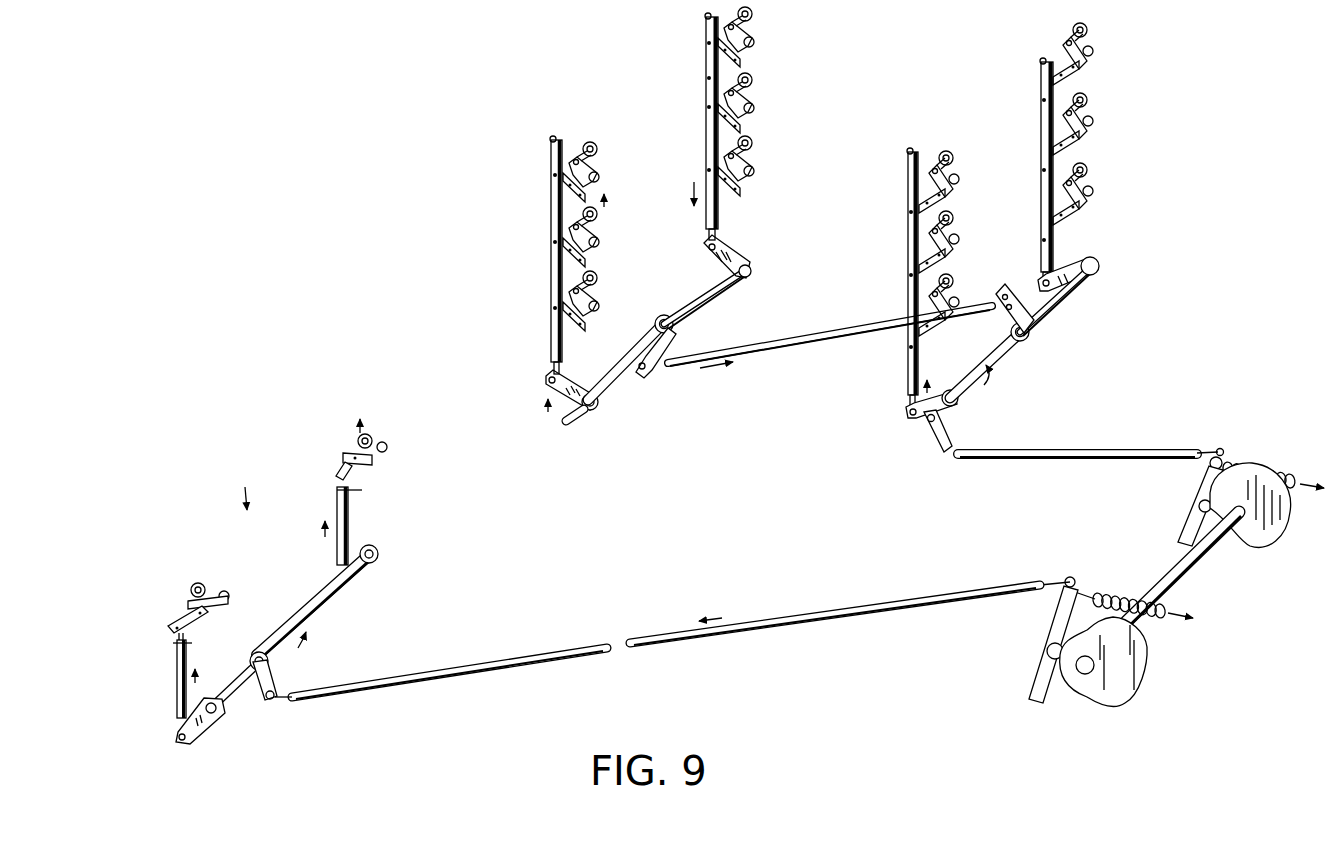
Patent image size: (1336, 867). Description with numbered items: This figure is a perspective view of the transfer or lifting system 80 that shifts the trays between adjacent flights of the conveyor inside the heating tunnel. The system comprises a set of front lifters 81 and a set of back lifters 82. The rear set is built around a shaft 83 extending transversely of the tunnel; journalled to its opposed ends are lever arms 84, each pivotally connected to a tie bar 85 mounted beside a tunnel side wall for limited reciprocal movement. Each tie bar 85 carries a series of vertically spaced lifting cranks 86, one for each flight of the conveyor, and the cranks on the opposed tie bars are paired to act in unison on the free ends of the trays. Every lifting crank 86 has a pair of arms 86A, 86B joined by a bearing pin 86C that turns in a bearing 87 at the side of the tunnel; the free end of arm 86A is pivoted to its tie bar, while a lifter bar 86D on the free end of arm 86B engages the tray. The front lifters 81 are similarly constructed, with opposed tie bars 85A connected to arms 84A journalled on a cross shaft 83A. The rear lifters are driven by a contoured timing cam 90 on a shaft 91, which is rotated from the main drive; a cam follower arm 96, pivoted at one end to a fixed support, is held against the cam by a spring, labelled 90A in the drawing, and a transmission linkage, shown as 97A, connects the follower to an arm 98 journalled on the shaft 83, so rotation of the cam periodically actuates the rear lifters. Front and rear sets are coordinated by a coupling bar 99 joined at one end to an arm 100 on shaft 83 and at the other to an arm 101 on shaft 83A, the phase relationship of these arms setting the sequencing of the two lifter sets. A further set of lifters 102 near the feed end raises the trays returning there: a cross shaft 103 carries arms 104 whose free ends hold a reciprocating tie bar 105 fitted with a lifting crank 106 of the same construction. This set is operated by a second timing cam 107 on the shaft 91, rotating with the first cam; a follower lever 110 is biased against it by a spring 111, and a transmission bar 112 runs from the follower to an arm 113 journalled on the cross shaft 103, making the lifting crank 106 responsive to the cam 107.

The transfer or lifting system 80 is at (1175, 124).
The front lifters 81 is at (784, 124).
The back lifters 82 is at (976, 126).
The shaft 83 is at (1050, 318).
The cross shaft 83A is at (717, 302).
The lever arms 84 is at (1062, 260).
The arms 84A is at (547, 381).
The tie bar 85 is at (907, 265).
The tie bars 85A is at (556, 258).
The lifting cranks 86 is at (947, 222).
The arm 86A is at (568, 327).
The arm 86B is at (593, 295).
The bearing pin 86C is at (593, 315).
The lifter bar 86D is at (592, 268).
The bearing 87 is at (593, 237).
The timing cam 90 is at (1250, 540).
The spring 90A is at (1303, 470).
The shaft 91 is at (1178, 588).
The cam follower arm 96 is at (1198, 492).
The rod 97A is at (1128, 452).
The arm 98 is at (955, 438).
The coupling bar 99 is at (808, 337).
The arm 100 is at (1012, 292).
The arm 101 is at (642, 370).
The set of lifters 102 is at (243, 482).
The cross shaft 103 is at (335, 592).
The arms 104 is at (378, 560).
The tie bar 105 is at (350, 525).
The lifting crank 106 is at (384, 456).
The second timing cam 107 is at (1098, 705).
The follower lever 110 is at (1032, 681).
The spring 111 is at (1108, 596).
The transmission bar 112 is at (765, 615).
The arm 113 is at (262, 714).